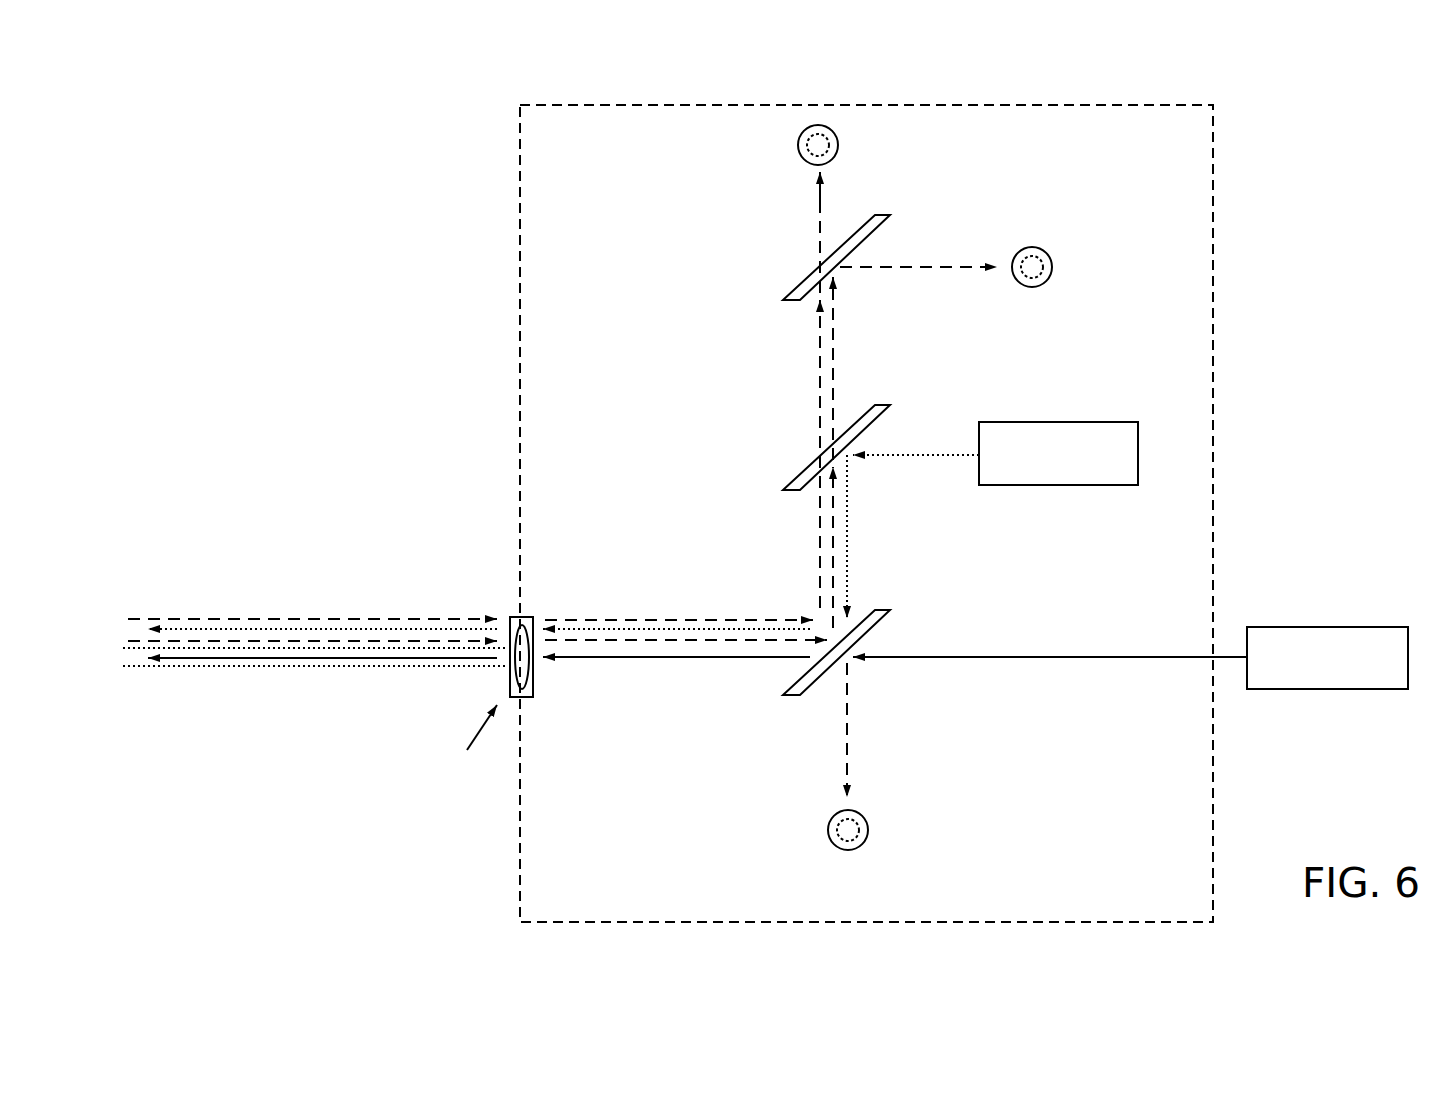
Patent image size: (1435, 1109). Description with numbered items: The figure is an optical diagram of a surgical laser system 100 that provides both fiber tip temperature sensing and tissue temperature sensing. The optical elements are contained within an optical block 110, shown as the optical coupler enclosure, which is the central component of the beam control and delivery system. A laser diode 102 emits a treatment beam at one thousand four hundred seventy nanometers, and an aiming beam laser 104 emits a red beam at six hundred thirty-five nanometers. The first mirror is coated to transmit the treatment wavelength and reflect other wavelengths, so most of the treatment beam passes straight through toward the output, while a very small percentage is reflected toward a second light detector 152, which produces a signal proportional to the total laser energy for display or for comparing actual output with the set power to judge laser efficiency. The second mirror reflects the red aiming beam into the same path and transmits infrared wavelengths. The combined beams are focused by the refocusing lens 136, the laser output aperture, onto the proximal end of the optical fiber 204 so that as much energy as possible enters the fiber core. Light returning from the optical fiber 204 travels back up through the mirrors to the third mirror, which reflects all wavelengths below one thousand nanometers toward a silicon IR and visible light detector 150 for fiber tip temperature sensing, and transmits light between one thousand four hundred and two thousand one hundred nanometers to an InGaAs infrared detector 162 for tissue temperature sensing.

The surgical laser system 100 is at (386, 426).
The laser diode 102 is at (1308, 689).
The aiming beam laser 104 is at (1066, 485).
The optical block 110 is at (519, 362).
The refocusing lens 136 is at (507, 620).
The silicon IR and visible light detector 150 is at (1050, 255).
The second light detector 152 is at (866, 823).
The InGaAs infrared detector 162 is at (838, 148).
The optical fiber 204 is at (300, 600).